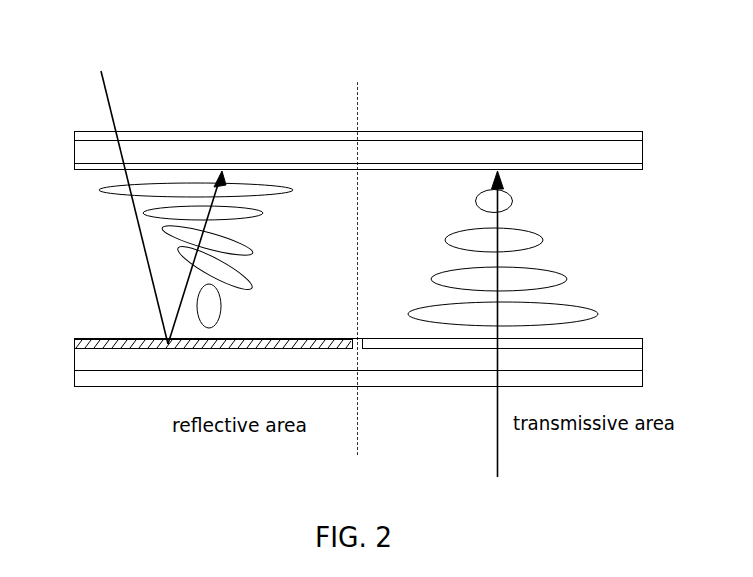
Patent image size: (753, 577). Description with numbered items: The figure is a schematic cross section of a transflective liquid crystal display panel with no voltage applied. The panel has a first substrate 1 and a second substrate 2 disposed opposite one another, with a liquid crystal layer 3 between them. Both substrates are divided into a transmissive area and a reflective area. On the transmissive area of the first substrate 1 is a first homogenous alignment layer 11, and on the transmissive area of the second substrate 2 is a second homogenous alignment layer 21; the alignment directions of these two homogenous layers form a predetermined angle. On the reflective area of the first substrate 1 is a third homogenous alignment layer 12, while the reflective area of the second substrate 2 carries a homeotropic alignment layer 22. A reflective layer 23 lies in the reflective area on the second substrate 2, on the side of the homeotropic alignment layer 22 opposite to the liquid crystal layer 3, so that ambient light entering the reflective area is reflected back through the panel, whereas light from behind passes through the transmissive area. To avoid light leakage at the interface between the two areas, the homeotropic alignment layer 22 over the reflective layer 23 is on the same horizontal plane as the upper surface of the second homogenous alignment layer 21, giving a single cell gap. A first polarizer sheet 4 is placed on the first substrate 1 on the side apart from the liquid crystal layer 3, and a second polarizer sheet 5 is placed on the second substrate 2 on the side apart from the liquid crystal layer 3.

The first substrate 1 is at (190, 150).
The first homogenous alignment layer 11 is at (632, 171).
The third homogenous alignment layer 12 is at (90, 171).
The first polarizer sheet 4 is at (292, 133).
The liquid crystal layer 3 is at (501, 183).
The second substrate 2 is at (400, 357).
The second homogenous alignment layer 21 is at (632, 340).
The homeotropic alignment layer 22 is at (82, 338).
The reflective layer 23 is at (75, 348).
The second polarizer sheet 5 is at (375, 381).